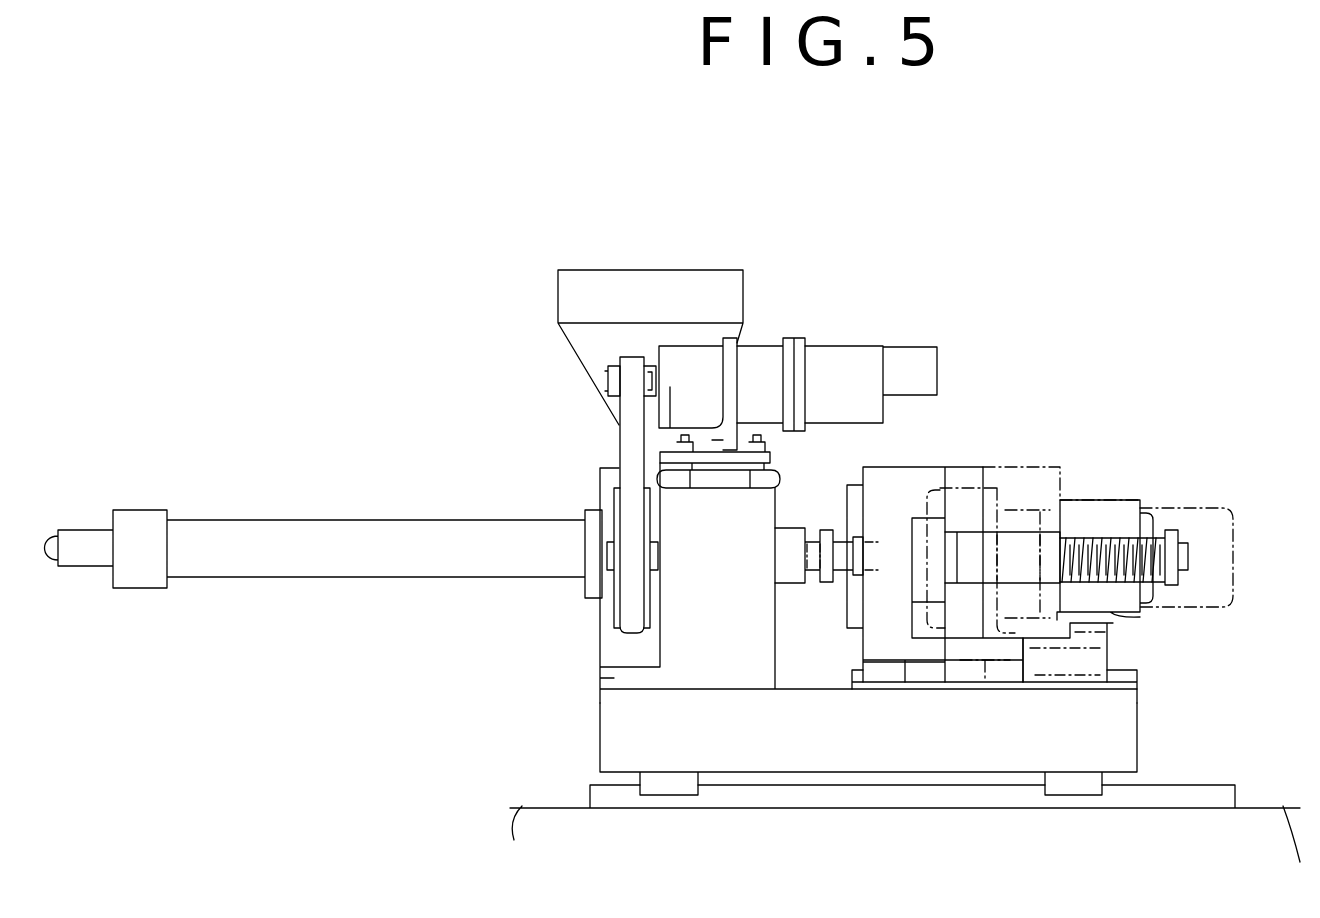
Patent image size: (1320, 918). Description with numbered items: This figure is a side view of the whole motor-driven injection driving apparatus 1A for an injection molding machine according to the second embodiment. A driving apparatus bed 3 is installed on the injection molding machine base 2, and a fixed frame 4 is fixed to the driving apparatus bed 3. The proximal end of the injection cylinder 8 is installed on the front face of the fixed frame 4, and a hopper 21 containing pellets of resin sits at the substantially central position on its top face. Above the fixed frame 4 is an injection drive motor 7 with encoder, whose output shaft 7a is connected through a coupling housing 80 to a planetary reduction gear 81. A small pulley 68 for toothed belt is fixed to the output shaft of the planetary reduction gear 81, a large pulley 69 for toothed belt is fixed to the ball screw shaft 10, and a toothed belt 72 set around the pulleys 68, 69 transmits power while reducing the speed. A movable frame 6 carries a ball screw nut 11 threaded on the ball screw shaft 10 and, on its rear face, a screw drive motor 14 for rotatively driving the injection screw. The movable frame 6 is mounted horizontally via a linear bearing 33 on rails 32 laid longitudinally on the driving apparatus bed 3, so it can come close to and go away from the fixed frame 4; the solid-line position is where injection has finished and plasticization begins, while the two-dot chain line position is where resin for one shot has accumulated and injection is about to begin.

The motor-driven injection driving apparatus 1A is at (1091, 300).
The injection molding machine base 2 is at (520, 838).
The driving apparatus bed 3 is at (907, 757).
The fixed frame 4 is at (612, 680).
The movable frame 6 is at (917, 465).
The injection drive motor 7 is at (858, 368).
The output shaft 7a is at (656, 375).
The injection cylinder 8 is at (297, 520).
The ball screw shaft 10 is at (1127, 540).
The ball screw nut 11 is at (1013, 547).
The screw drive motor 14 is at (1233, 508).
The hopper 21 is at (667, 270).
The rails 32 is at (1138, 683).
The linear bearing 33 is at (1013, 670).
The small pulley for toothed belt 68 is at (605, 396).
The large pulley for toothed belt 69 is at (603, 613).
The toothed belt 72 is at (617, 445).
The coupling housing 80 is at (767, 360).
The planetary reduction gear 81 is at (700, 362).